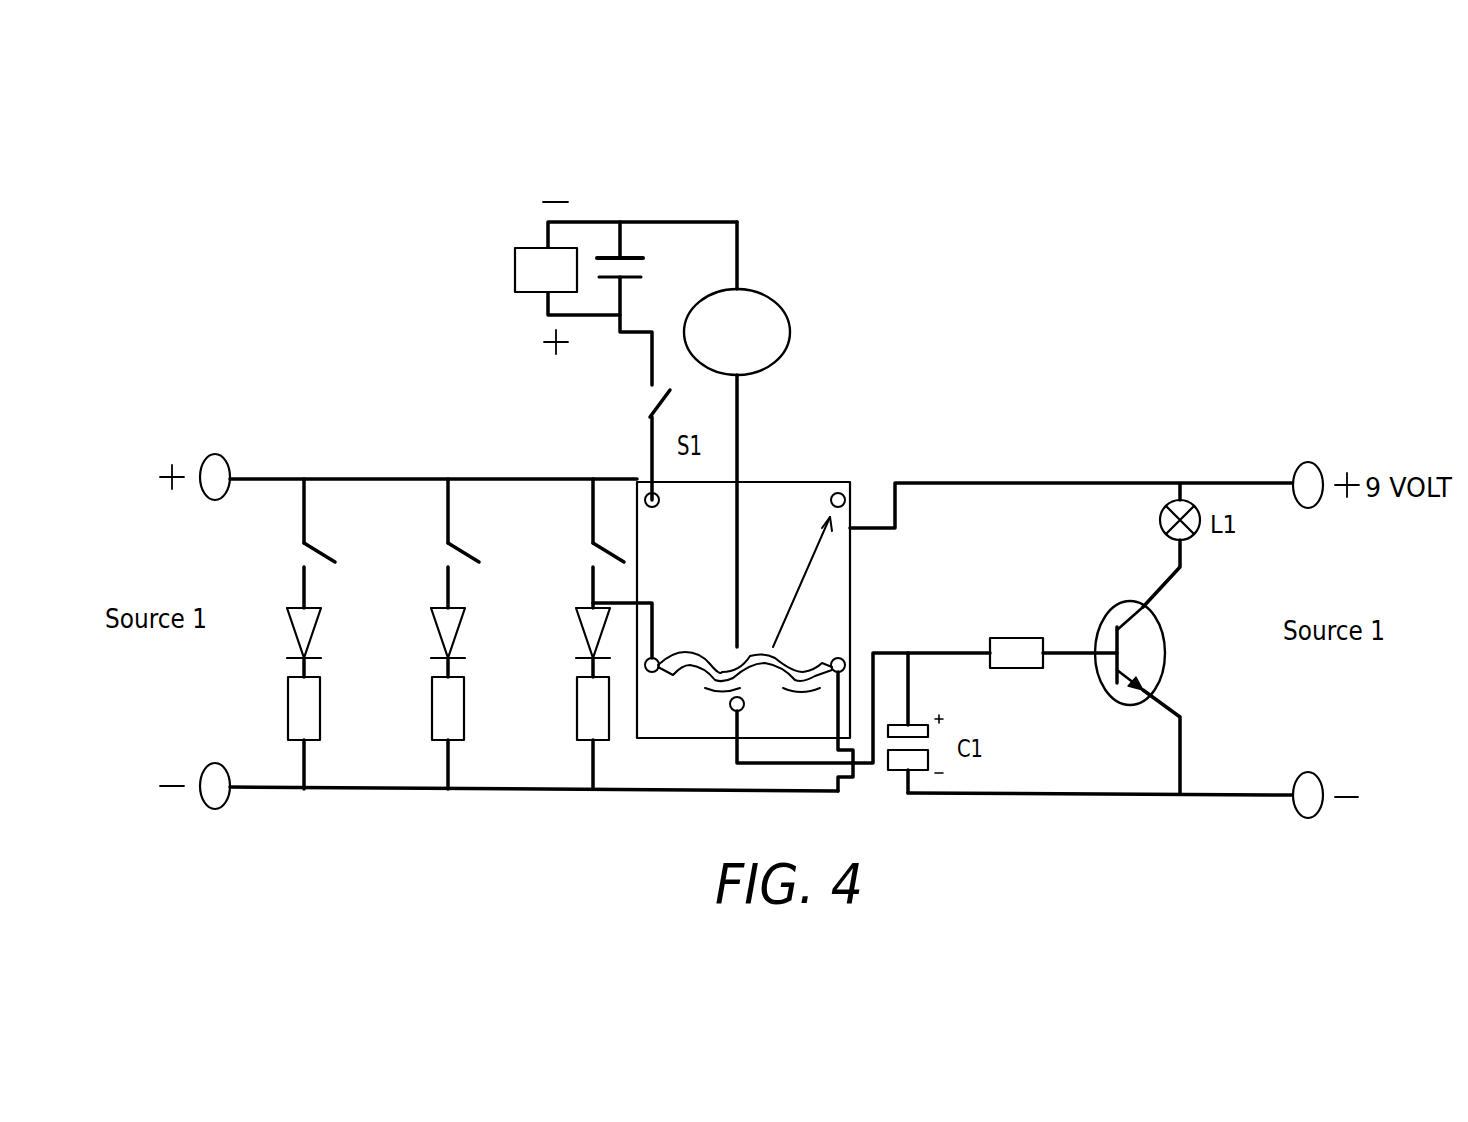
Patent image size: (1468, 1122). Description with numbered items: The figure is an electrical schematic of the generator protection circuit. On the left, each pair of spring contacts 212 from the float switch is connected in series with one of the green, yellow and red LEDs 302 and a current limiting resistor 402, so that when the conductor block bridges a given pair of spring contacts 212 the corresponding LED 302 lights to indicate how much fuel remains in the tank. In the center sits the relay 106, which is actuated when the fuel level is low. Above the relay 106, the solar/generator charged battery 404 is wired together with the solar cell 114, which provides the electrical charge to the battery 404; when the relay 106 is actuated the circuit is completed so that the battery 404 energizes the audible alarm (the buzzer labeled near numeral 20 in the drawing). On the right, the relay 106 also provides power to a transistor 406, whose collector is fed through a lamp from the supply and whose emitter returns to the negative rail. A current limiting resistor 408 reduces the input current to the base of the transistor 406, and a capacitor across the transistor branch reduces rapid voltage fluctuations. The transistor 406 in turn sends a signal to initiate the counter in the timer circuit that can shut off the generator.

The solar cell 114 is at (547, 249).
The solar/generator charged battery 404 is at (635, 257).
The buzzer 20 is at (792, 330).
The relay 106 is at (785, 481).
The spring contacts 212 is at (434, 539).
The LEDs 302 is at (416, 640).
The current limiting resistors 402 is at (420, 715).
The transistor 406 is at (1160, 623).
The current limiting resistor 408 is at (1017, 668).